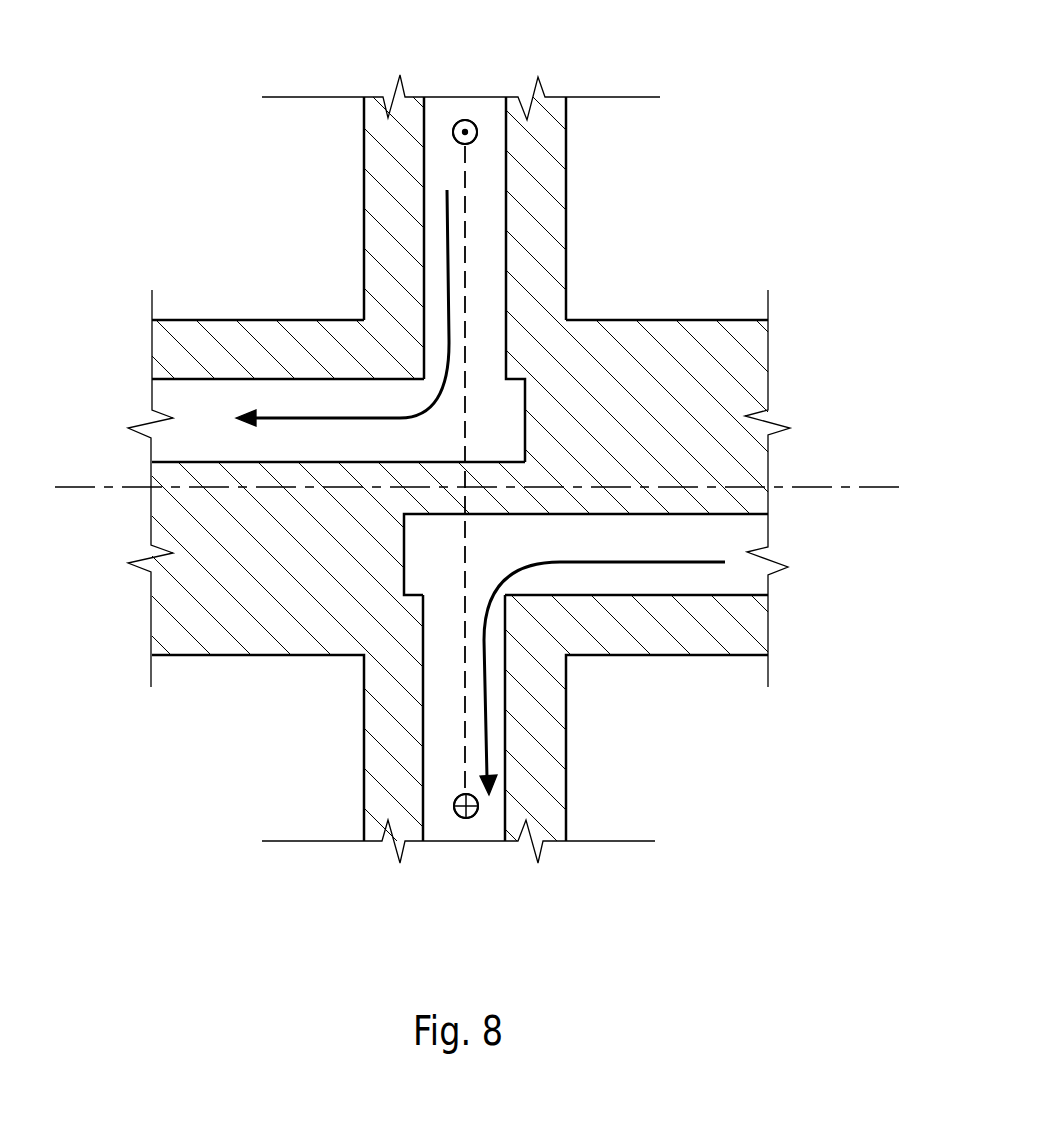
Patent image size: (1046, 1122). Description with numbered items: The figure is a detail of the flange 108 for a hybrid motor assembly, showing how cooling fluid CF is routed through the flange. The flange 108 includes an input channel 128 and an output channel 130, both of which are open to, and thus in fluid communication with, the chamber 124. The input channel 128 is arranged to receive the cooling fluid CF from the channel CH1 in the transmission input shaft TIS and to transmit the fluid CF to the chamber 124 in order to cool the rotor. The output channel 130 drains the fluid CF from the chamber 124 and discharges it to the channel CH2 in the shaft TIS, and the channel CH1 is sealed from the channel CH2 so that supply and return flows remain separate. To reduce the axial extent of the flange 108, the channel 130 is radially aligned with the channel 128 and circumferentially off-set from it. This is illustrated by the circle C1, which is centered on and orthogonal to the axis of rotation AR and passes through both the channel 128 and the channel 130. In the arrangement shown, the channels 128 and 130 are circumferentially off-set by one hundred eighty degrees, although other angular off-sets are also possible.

The flange 108 is at (571, 197).
The output channel 130 is at (445, 157).
The input channel 128 is at (447, 750).
The chamber 124 is at (485, 132).
The circle C1 is at (466, 258).
The channel in transmission input shaft CH1 is at (732, 542).
The channel in transmission input shaft CH2 is at (173, 400).
The cooling fluid CF is at (315, 418).
The transmission input shaft TIS is at (679, 311).
The axis of rotation AR is at (862, 490).